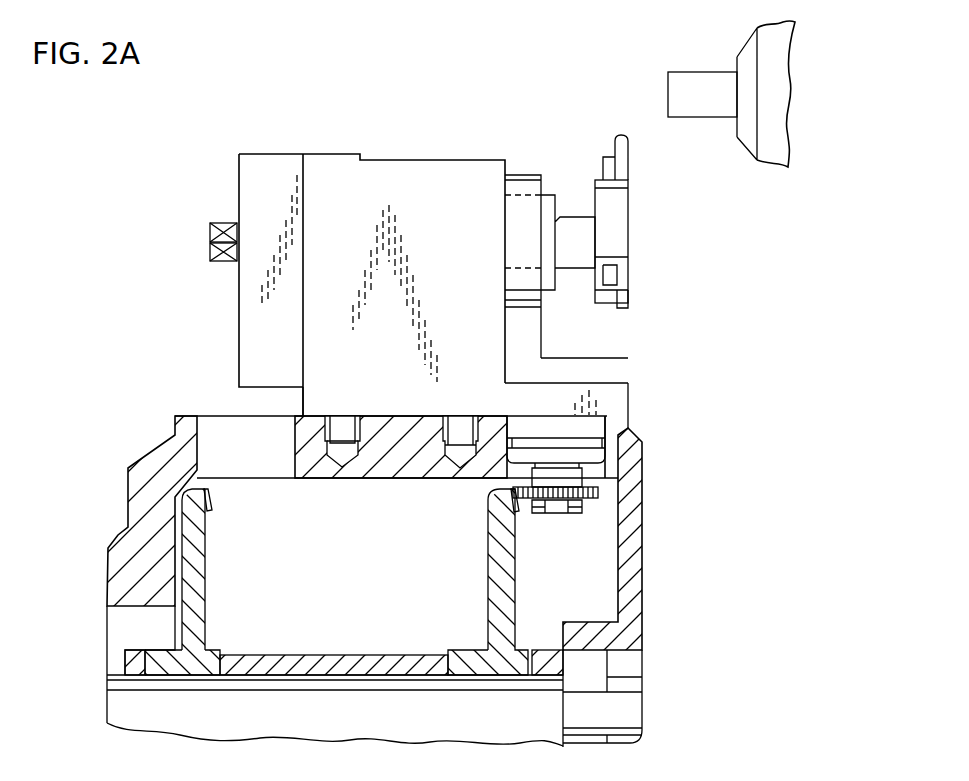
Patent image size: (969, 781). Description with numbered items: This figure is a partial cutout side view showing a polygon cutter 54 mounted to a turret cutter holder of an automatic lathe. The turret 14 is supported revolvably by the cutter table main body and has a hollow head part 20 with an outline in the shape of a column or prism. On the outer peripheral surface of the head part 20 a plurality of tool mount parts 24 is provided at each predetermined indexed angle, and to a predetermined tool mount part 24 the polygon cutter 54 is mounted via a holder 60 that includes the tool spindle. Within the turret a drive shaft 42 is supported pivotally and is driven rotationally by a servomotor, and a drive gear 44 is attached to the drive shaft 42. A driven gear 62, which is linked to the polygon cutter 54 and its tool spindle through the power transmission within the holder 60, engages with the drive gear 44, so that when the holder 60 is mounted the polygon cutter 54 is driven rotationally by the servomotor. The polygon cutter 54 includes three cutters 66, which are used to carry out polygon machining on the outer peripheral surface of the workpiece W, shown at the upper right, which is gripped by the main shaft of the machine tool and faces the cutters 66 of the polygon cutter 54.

The turret 14 is at (648, 593).
The head part 20 is at (218, 416).
The tool mount part 24 is at (375, 414).
The drive shaft 42 is at (290, 697).
The drive gear 44 is at (487, 557).
The polygon cutter 54 is at (597, 182).
The holder 60 is at (400, 185).
The driven gear 62 is at (605, 492).
The cutter 66 is at (617, 145).
The workpiece W is at (690, 70).